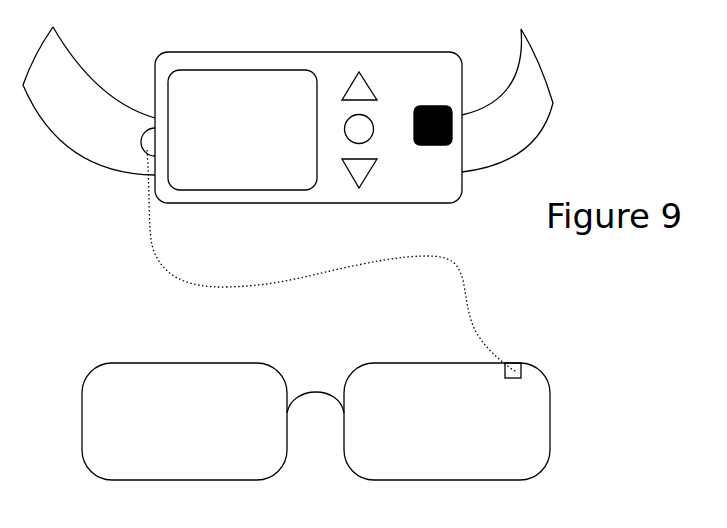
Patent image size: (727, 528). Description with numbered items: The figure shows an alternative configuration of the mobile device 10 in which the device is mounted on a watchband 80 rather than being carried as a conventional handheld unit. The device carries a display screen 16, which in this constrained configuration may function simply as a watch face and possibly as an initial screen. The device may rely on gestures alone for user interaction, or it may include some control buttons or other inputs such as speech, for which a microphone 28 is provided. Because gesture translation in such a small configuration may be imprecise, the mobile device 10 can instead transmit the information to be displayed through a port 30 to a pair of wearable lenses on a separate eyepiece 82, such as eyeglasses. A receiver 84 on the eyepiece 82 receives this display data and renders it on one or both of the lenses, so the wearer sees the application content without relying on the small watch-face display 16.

The mobile device 10 is at (360, 52).
The display screen 16 is at (199, 70).
The microphone 28 is at (430, 108).
The port 30 is at (142, 147).
The watchband 80 is at (550, 78).
The eyepiece 82 is at (222, 362).
The receiver 84 is at (513, 362).